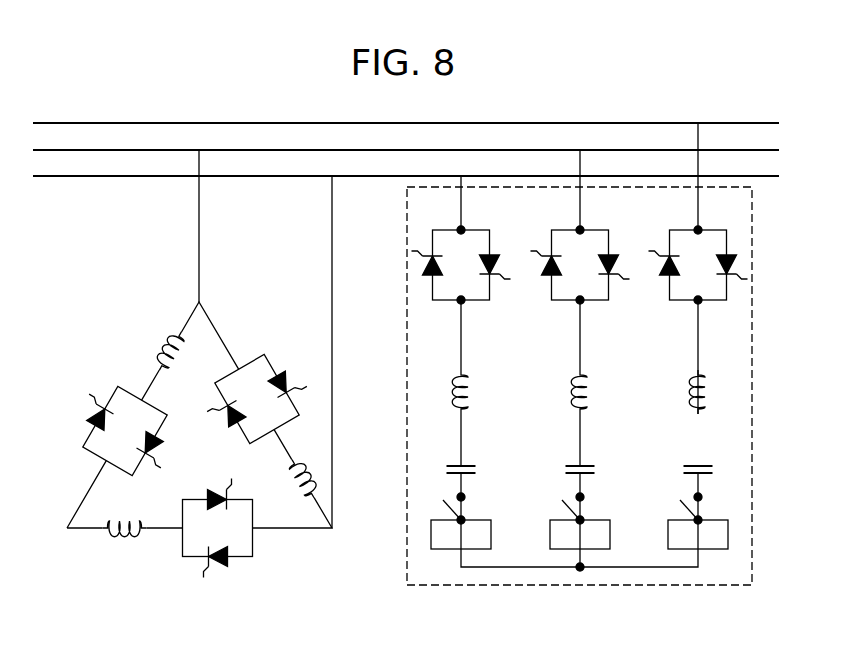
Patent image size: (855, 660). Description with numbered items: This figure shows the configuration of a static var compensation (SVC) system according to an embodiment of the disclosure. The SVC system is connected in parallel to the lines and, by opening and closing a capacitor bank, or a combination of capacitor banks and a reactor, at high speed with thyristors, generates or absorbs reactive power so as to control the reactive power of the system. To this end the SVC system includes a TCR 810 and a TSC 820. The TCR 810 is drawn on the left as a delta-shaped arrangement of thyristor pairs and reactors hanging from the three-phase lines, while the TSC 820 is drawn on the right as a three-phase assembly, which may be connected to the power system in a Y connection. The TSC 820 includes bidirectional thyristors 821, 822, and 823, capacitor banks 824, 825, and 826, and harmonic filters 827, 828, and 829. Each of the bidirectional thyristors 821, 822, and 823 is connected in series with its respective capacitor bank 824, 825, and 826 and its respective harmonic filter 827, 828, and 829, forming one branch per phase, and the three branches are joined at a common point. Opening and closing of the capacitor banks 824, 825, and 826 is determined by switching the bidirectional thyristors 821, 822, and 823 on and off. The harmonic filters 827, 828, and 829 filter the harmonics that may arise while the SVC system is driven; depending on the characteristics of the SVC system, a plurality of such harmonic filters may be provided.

The TCR 810 is at (88, 550).
The TSC 820 is at (582, 586).
The bidirectional thyristor 821 is at (480, 230).
The bidirectional thyristor 822 is at (599, 230).
The bidirectional thyristor 823 is at (710, 229).
The capacitor bank 824 is at (469, 466).
The capacitor bank 825 is at (588, 466).
The capacitor bank 826 is at (708, 463).
The harmonic filter 827 is at (483, 520).
The harmonic filter 828 is at (602, 520).
The harmonic filter 829 is at (717, 520).